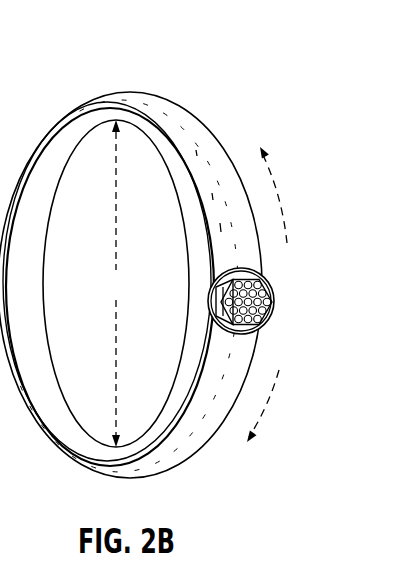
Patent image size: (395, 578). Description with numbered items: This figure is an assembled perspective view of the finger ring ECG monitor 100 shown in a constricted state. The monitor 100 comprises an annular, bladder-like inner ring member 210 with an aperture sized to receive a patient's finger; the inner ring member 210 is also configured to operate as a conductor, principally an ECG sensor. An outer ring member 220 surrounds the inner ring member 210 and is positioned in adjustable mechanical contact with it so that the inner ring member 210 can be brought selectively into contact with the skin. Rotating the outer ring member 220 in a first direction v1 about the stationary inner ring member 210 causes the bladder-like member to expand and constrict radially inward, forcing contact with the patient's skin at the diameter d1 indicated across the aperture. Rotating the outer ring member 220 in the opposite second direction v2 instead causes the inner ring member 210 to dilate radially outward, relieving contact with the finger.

The finger ring ECG monitor 100 is at (209, 65).
The inner ring member 210 is at (53, 368).
The outer ring member 220 is at (128, 92).
The diameter d1 is at (124, 283).
The first direction v1 is at (277, 191).
The second direction v2 is at (267, 398).